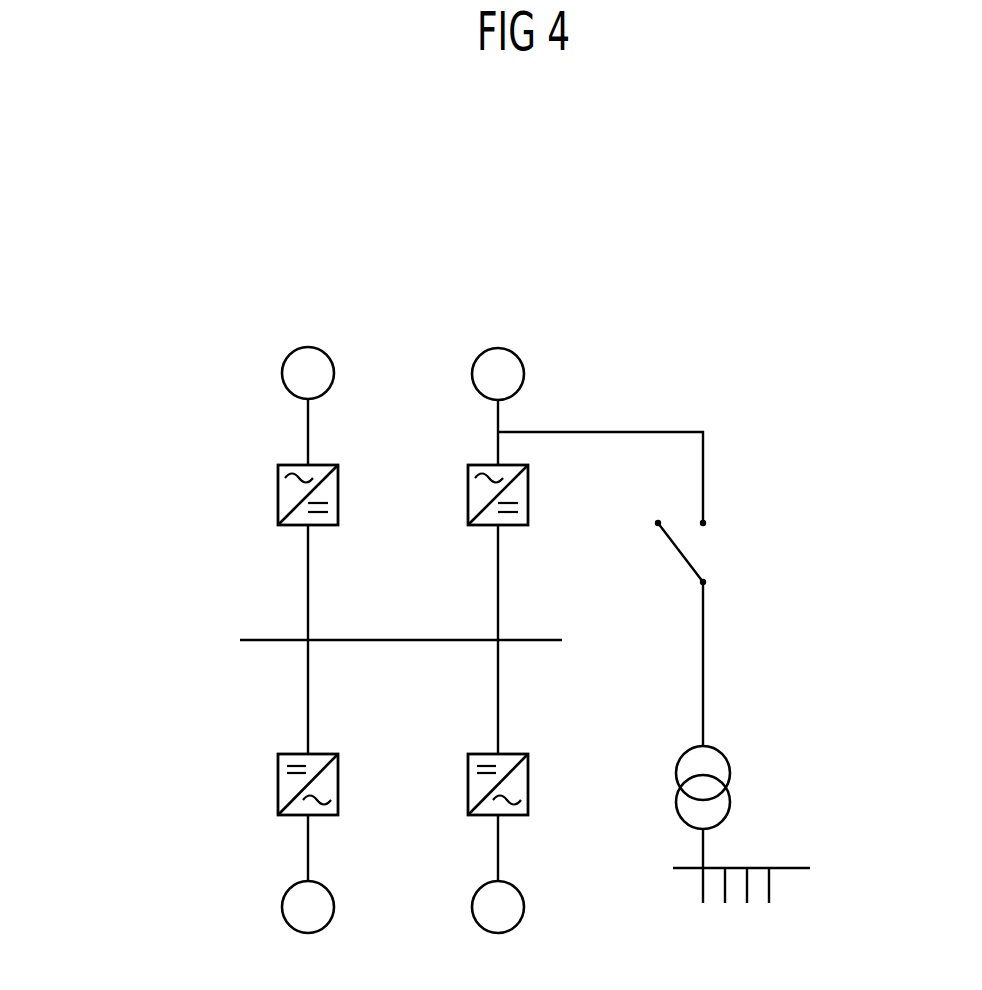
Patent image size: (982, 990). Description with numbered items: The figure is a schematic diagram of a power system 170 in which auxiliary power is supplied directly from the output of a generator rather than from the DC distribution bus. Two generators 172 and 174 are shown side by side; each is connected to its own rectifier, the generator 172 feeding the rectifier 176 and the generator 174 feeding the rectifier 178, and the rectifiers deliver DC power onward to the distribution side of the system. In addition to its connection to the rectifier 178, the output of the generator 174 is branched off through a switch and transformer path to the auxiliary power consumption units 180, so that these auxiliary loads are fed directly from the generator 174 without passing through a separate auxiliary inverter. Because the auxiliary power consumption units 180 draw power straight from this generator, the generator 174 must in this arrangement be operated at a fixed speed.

The power system 170 is at (168, 172).
The generator 172 is at (300, 348).
The generator 174 is at (488, 348).
The rectifier 176 is at (291, 527).
The rectifier 178 is at (481, 527).
The auxiliary power consumption units 180 is at (785, 866).